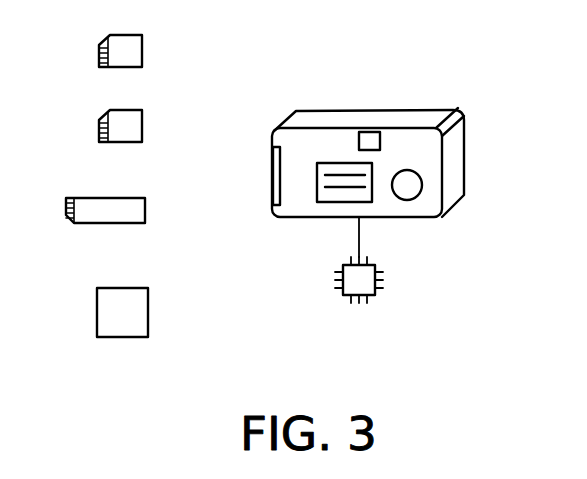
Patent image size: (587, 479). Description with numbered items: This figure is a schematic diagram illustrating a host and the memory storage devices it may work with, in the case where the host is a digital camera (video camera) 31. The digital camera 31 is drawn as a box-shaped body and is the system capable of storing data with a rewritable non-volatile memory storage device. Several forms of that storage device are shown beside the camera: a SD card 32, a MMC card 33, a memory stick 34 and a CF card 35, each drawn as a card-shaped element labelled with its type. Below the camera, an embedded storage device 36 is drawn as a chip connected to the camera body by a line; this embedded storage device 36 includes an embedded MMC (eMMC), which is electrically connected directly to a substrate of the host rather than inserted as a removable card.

The digital camera 31 is at (465, 150).
The SD card 32 is at (142, 39).
The MMC card 33 is at (142, 114).
The memory stick 34 is at (145, 212).
The CF card 35 is at (148, 308).
The embedded storage device 36 is at (383, 280).